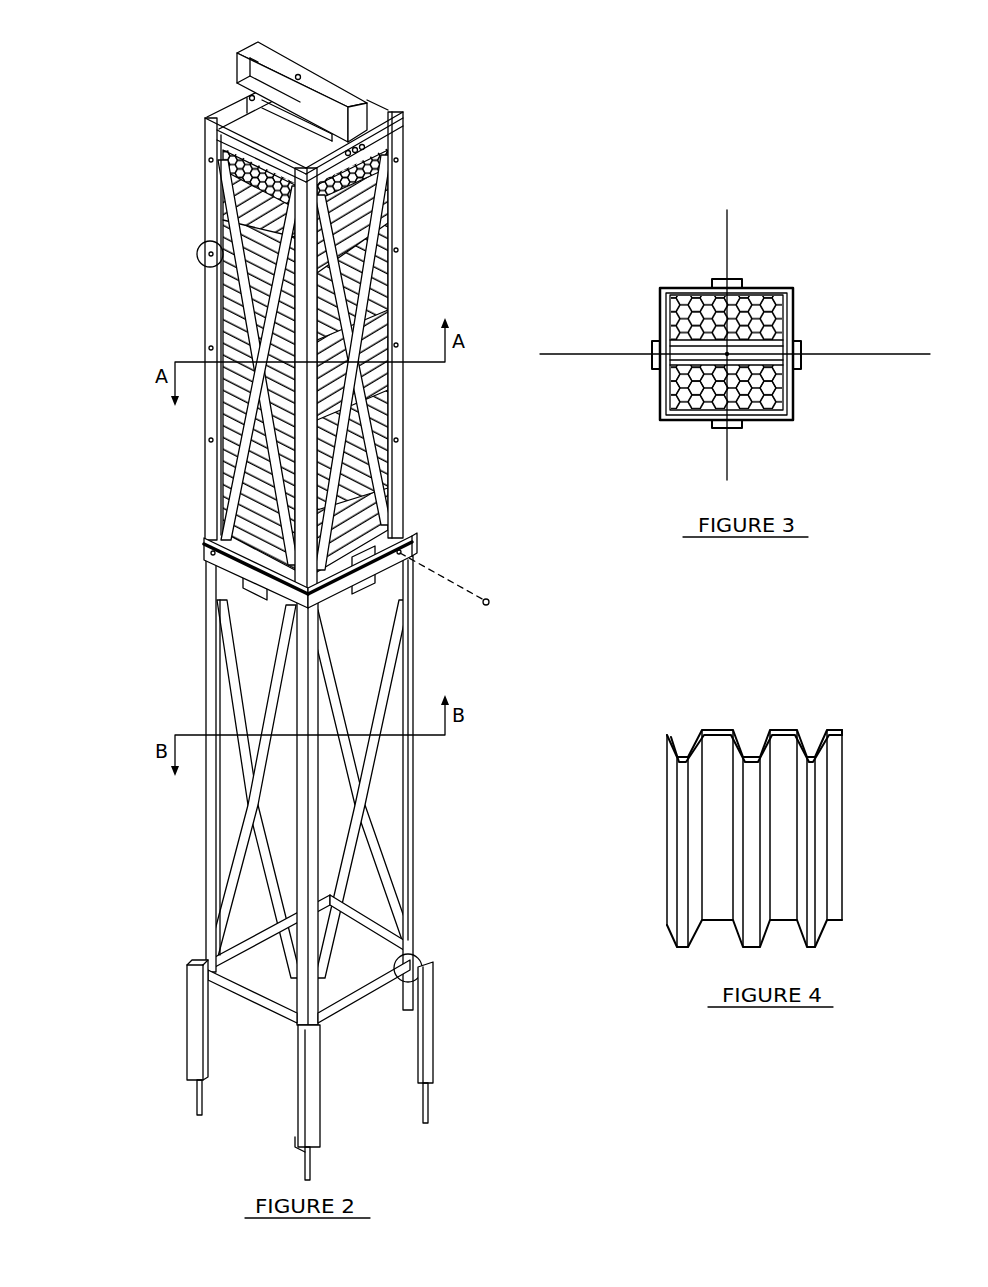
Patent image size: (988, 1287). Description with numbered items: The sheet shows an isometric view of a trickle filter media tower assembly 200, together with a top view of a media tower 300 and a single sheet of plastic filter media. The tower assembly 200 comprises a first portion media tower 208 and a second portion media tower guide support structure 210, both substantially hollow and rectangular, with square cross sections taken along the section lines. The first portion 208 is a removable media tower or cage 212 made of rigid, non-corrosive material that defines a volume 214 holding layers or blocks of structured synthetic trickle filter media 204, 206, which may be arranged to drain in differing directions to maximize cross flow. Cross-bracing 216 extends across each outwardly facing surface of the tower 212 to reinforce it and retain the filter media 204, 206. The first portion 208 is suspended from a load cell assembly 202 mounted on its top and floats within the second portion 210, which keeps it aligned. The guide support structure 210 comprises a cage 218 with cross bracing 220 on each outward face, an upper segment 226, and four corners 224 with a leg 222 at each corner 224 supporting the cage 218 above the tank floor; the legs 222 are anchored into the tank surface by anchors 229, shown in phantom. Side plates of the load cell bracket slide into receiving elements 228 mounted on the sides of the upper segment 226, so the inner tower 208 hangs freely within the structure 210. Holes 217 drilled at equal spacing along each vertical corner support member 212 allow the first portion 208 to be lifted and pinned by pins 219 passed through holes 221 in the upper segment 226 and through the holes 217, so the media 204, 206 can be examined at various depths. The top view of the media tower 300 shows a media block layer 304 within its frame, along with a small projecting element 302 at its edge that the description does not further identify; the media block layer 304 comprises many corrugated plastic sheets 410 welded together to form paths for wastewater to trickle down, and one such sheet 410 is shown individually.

In FIG. 2, the filter media tower assembly 200 is at (321, 609).
In FIG. 2, the load cell assembly 202 is at (342, 90).
In FIG. 2, the filter media 204 is at (404, 361).
In FIG. 2, the filter media 206 is at (409, 397).
In FIG. 2, the first portion media tower 208 is at (273, 315).
In FIG. 2, the second portion media tower guide support structure 210 is at (321, 812).
In FIG. 2, the media tower cage 212 is at (233, 352).
In FIG. 2, the volume 214 is at (230, 152).
In FIG. 2, the cross-bracing 216 is at (357, 362).
In FIG. 2, the holes 217 is at (133, 222).
In FIG. 2, the cage 218 is at (238, 790).
In FIG. 2, the pins 219 is at (504, 577).
In FIG. 2, the cross bracing 220 is at (343, 789).
In FIG. 2, the holes 221 is at (306, 526).
In FIG. 2, the leg 222 is at (371, 1070).
In FIG. 2, the corners 224 is at (469, 942).
In FIG. 2, the upper segment 226 is at (465, 527).
In FIG. 2, the receiving element 228 is at (293, 596).
In FIG. 2, the anchors 229 is at (117, 1078).
In FIG. 3, the media tower 300 is at (780, 329).
In FIG. 3, the tab 302 is at (770, 234).
In FIG. 3, the media block layer 304 is at (780, 364).
In FIG. 4, the corrugated plastic sheet 410 is at (720, 804).